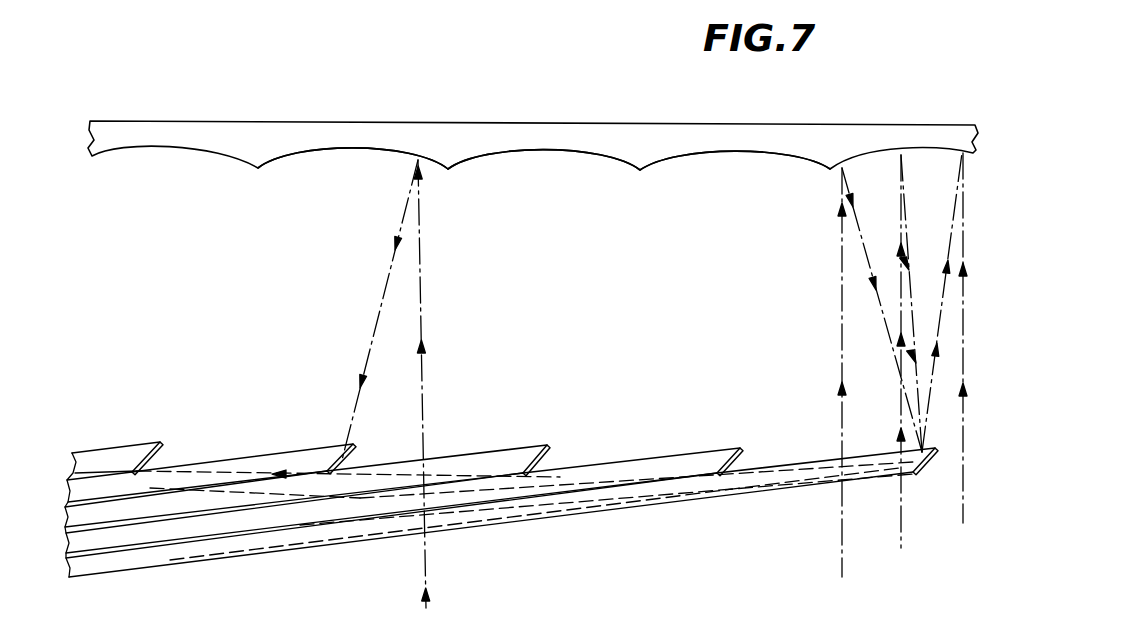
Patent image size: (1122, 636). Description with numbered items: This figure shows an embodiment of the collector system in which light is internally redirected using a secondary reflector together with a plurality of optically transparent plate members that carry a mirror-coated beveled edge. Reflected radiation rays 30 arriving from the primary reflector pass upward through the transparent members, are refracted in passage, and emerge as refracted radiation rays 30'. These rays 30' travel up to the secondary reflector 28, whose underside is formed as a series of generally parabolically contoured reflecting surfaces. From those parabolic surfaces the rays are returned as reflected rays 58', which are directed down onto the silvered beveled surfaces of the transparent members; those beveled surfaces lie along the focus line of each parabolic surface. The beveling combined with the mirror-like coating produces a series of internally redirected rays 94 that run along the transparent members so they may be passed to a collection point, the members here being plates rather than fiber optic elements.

The secondary reflector 28 is at (488, 118).
The reflected radiation rays 30 is at (489, 515).
The refracted radiation rays 30' is at (451, 384).
The reflected rays 58' is at (368, 310).
The internally redirected rays 94 is at (293, 467).